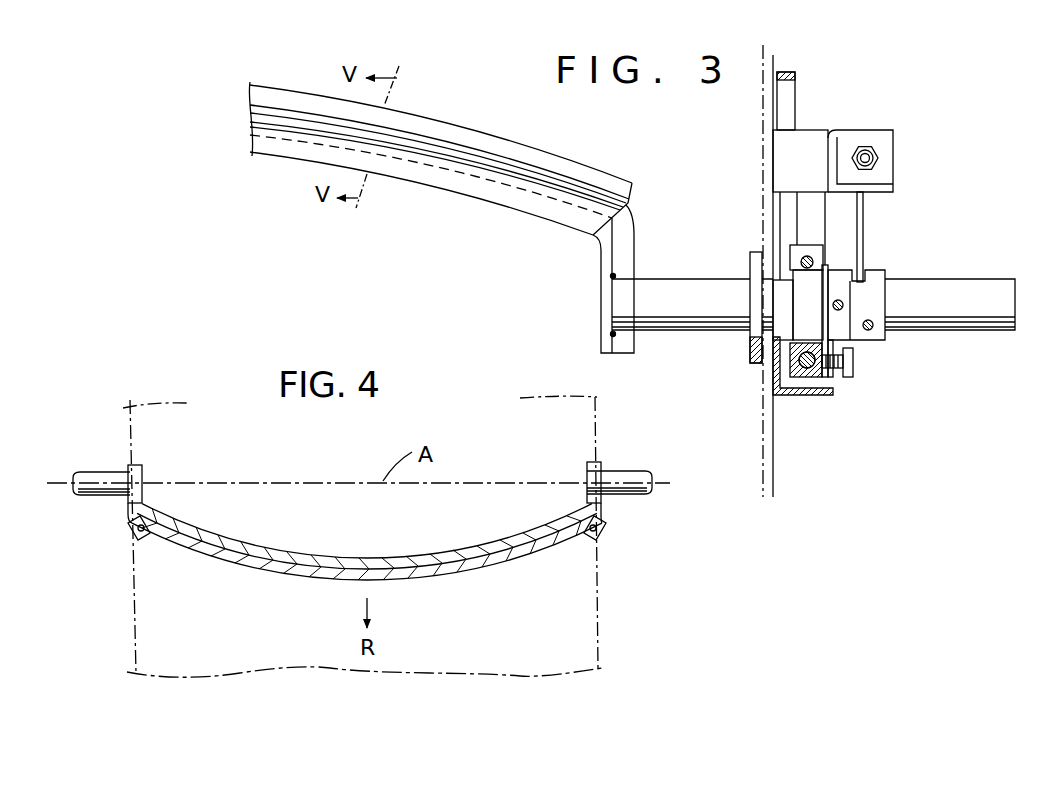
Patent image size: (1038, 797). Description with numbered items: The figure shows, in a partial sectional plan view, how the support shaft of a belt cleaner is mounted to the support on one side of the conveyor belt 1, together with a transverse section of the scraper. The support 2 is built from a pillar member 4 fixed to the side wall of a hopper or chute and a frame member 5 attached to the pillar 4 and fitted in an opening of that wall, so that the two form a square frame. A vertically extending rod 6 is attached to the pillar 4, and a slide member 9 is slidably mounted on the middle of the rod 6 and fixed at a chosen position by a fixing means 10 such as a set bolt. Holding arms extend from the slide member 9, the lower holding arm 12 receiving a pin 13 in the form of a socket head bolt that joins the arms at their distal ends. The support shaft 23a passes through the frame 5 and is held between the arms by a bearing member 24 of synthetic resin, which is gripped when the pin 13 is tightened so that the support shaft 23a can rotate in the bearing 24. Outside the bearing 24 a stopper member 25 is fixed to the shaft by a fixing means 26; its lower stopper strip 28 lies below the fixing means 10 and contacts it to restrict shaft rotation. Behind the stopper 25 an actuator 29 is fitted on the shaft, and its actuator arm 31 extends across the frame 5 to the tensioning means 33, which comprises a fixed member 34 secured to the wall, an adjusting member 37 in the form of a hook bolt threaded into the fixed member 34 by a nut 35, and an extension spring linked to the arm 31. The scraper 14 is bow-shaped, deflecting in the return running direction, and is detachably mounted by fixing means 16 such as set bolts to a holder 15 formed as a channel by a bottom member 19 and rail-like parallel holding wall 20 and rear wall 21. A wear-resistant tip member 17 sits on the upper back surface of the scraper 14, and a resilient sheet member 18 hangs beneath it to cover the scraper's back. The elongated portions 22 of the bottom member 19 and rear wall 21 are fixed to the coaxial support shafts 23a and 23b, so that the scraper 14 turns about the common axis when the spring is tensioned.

In FIG. 4, the conveyor belt 1 is at (330, 678).
In FIG. 3, the support 2 is at (824, 413).
In FIG. 3, the pillar member 4 is at (828, 397).
In FIG. 3, the frame member 5 is at (797, 100).
In FIG. 3, the rod 6 is at (800, 374).
In FIG. 3, the slide member 9 is at (810, 378).
In FIG. 3, the fixing means 10 is at (854, 362).
In FIG. 3, the lower holding arm 12 is at (802, 245).
In FIG. 3, the pin 13 is at (810, 258).
In FIG. 3, the scraper 14 is at (468, 150).
In FIG. 4, the scraper 14 is at (337, 571).
In FIG. 3, the holder 15 is at (541, 143).
In FIG. 4, the holder 15 is at (305, 556).
In FIG. 4, the fixing means 16 is at (147, 536).
In FIG. 3, the tip member 17 is at (443, 155).
In FIG. 3, the resilient sheet member 18 is at (488, 193).
In FIG. 3, the bottom member 19 is at (623, 227).
In FIG. 3, the holding wall 20 is at (577, 162).
In FIG. 3, the rear wall 21 is at (551, 198).
In FIG. 3, the elongated portion 22 is at (601, 344).
In FIG. 3, the support shaft 23a is at (683, 279).
In FIG. 4, the support shaft 23a is at (97, 472).
In FIG. 4, the support shaft 23b is at (630, 471).
In FIG. 3, the bearing member 24 is at (807, 302).
In FIG. 3, the stopper member 25 is at (837, 282).
In FIG. 3, the fixing means 26 is at (847, 305).
In FIG. 3, the lower stopper strip 28 is at (837, 380).
In FIG. 3, the actuator 29 is at (881, 271).
In FIG. 3, the actuator arm 31 is at (866, 212).
In FIG. 3, the tensioning means 33 is at (865, 119).
In FIG. 3, the fixed member 34 is at (880, 184).
In FIG. 3, the nut 35 is at (878, 156).
In FIG. 3, the adjusting member 37 is at (866, 150).